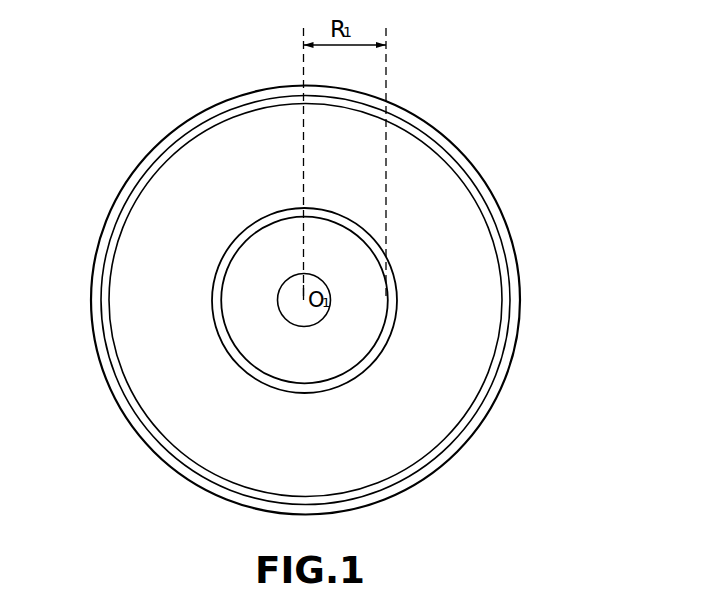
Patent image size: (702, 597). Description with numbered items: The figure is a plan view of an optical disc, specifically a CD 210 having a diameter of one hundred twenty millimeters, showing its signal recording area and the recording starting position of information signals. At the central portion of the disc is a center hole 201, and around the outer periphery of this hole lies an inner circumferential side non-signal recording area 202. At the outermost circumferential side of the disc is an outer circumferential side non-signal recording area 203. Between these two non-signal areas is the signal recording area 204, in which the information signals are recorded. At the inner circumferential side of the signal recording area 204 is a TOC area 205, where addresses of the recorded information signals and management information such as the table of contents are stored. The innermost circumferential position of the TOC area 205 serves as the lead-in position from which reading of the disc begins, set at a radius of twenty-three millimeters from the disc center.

The CD 210 is at (345, 290).
The outer circumferential side non-signal recording area 203 is at (498, 377).
The signal recording area 204 is at (450, 235).
The TOC area 205 is at (395, 298).
The inner circumferential side non-signal recording area 202 is at (350, 355).
The center hole 201 is at (281, 297).